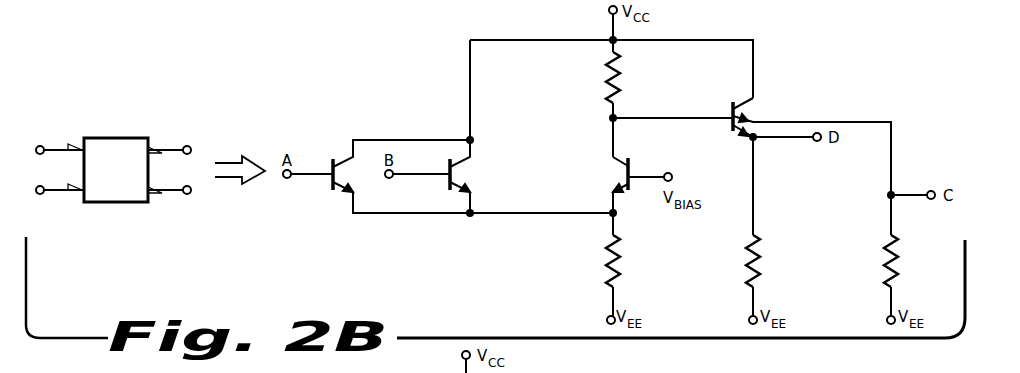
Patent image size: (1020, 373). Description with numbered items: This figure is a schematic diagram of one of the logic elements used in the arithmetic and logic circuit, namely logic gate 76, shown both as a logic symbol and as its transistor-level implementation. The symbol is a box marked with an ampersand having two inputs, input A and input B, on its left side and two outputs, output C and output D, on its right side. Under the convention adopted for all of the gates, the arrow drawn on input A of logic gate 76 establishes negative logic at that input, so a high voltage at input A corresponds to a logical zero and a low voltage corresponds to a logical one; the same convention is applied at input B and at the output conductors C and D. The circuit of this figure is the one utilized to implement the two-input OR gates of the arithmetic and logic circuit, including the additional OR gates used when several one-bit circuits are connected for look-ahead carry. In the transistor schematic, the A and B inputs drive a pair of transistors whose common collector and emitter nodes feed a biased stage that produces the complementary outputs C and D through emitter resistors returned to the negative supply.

The logic gate 76 is at (113, 161).
The A input A is at (59, 139).
The B input B is at (59, 202).
The C output C is at (169, 139).
The D output D is at (170, 203).